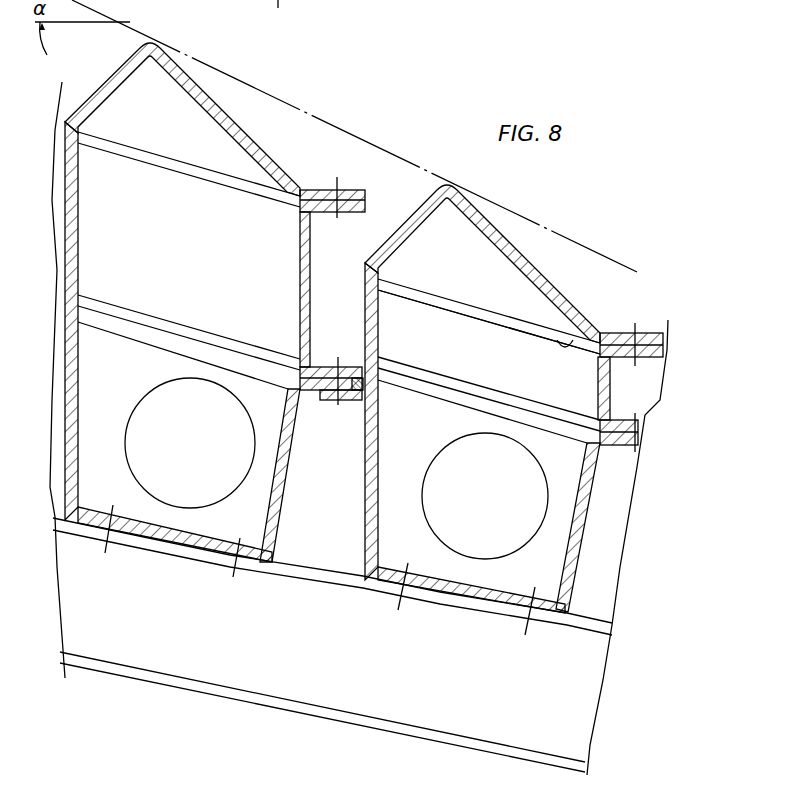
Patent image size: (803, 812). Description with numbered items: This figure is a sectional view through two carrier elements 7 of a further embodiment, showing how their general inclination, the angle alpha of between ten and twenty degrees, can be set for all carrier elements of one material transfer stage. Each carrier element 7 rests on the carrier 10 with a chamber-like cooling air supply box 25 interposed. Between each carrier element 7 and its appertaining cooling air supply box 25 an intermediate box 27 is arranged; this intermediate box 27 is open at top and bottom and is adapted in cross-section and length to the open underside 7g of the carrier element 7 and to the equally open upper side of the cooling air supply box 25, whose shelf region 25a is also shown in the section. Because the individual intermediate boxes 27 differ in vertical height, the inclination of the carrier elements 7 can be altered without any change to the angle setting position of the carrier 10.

The carrier element 7 is at (235, 118).
The open underside of carrier element 7g is at (573, 348).
The intermediate box 27 is at (288, 248).
The cooling air supply box 25 is at (392, 471).
The shelf of housing box 25a is at (473, 398).
The carrier 10 is at (150, 642).